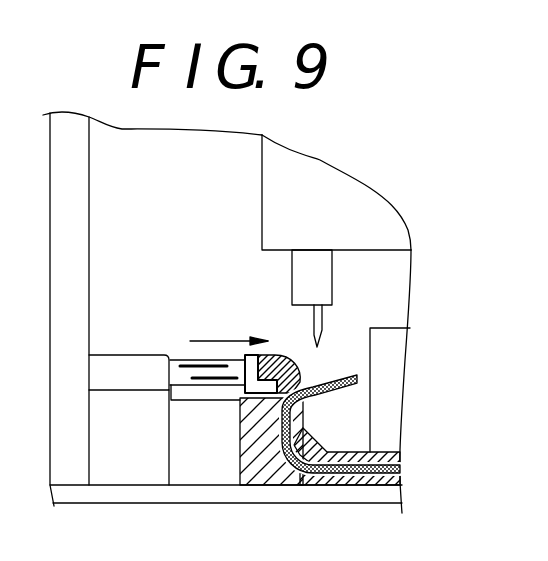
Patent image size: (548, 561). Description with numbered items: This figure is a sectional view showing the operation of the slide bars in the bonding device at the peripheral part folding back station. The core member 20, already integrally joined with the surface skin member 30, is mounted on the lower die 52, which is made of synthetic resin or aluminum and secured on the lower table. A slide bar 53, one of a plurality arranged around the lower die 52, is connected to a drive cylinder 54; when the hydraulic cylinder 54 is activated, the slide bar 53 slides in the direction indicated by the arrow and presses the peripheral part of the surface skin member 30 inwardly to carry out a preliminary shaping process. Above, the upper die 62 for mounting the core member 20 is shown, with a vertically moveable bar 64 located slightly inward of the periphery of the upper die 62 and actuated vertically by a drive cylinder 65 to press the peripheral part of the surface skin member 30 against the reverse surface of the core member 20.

The core member 20 is at (312, 443).
The surface skin member 30 is at (357, 485).
The lower die 52 is at (273, 453).
The slide bar 53 is at (265, 358).
The drive cylinder 54 is at (131, 357).
The upper die 62 is at (393, 362).
The vertically moveable bar 64 is at (323, 328).
The drive cylinder 65 is at (323, 283).